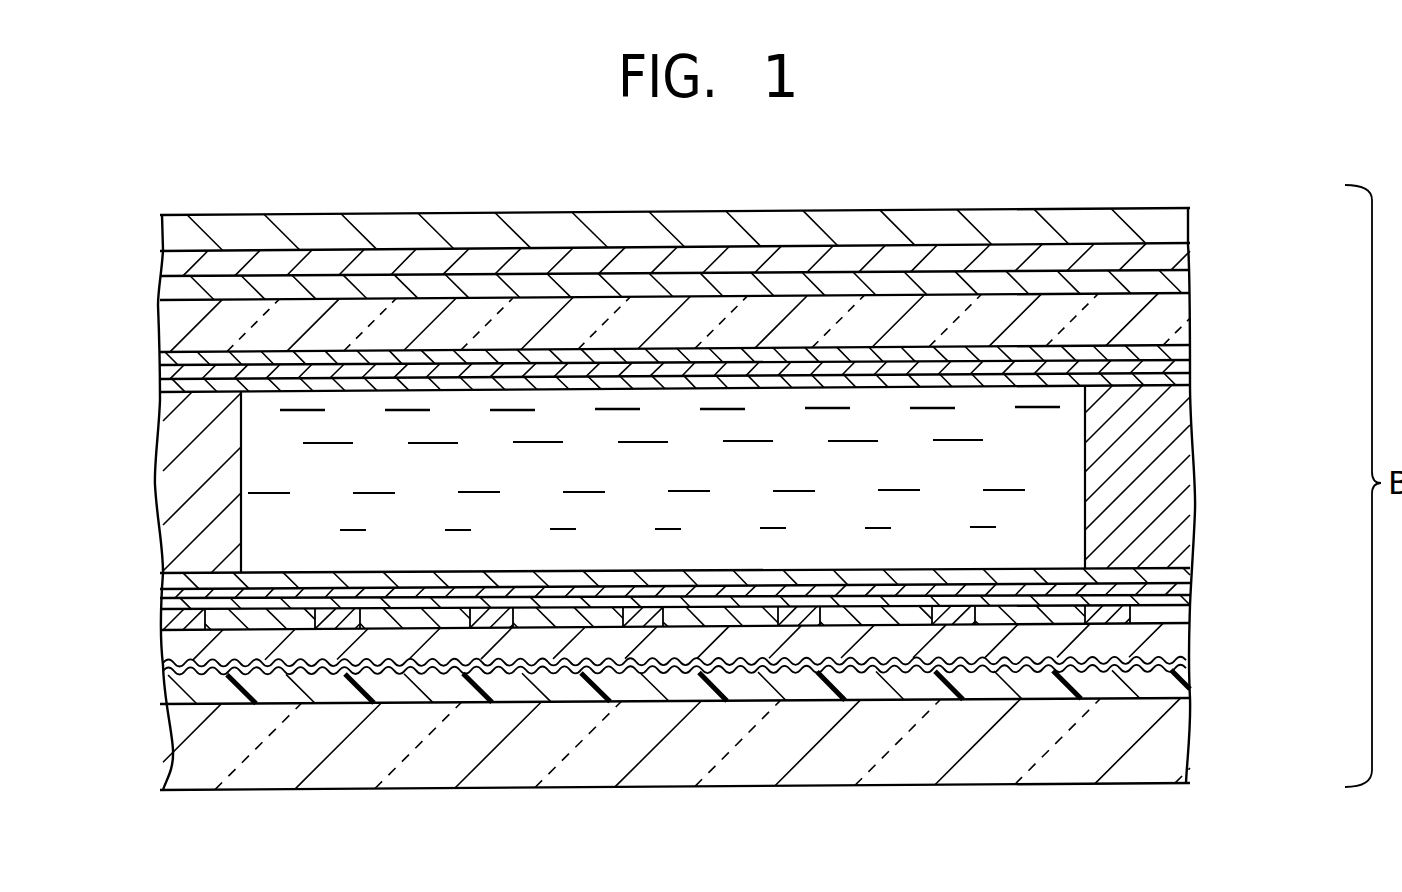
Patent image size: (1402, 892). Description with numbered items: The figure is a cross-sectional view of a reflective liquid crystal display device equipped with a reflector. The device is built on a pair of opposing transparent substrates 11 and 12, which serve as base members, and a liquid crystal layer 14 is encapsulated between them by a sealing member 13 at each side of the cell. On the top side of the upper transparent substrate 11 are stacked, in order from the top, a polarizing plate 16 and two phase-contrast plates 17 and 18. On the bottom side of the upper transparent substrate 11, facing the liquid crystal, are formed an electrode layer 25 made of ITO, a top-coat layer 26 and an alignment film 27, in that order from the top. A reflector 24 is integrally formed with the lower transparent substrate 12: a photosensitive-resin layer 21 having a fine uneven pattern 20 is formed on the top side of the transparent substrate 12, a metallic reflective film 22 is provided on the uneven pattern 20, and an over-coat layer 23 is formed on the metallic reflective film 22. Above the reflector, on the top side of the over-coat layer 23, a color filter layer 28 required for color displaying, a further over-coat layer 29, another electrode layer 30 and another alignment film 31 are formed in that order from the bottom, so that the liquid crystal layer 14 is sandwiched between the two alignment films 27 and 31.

The transparent substrate 11 is at (1177, 318).
The transparent substrate 12 is at (714, 744).
The sealing member 13 is at (193, 479).
The liquid crystal layer 14 is at (1040, 462).
The polarizing plate 16 is at (1180, 227).
The phase-contrast plate 17 is at (1182, 255).
The phase-contrast plate 18 is at (1172, 278).
The fine uneven pattern 20 is at (716, 756).
The photosensitive-resin layer 21 is at (1175, 692).
The metallic reflective film 22 is at (1183, 666).
The over-coat layer 23 is at (1177, 638).
The reflector 24 is at (747, 739).
The electrode layer 25 is at (1185, 352).
The top-coat layer 26 is at (1185, 364).
The alignment film 27 is at (1187, 374).
The color filter layer 28 is at (1186, 612).
The over-coat layer 29 is at (1188, 599).
The electrode layer 30 is at (1188, 586).
The alignment film 31 is at (1150, 576).